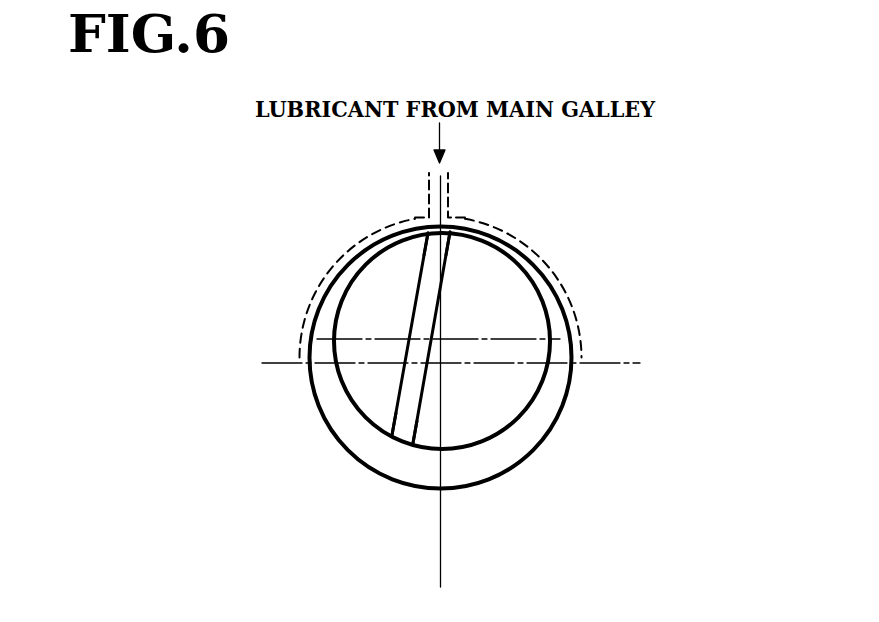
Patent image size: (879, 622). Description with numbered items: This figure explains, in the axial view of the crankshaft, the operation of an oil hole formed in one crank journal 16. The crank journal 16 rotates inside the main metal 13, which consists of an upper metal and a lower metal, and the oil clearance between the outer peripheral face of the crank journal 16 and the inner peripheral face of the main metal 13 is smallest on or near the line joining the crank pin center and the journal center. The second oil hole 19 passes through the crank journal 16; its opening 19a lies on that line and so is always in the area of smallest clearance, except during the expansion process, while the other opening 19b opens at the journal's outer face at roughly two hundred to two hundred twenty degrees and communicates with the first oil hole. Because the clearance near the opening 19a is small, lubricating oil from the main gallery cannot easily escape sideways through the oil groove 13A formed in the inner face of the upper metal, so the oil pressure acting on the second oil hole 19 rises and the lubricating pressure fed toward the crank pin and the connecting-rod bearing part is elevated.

The main metal 13 is at (572, 380).
The oil groove 13A is at (582, 302).
The crank journal 16 is at (512, 397).
The second oil hole 19 is at (413, 323).
The opening 19a is at (452, 235).
The opening 19b is at (405, 413).